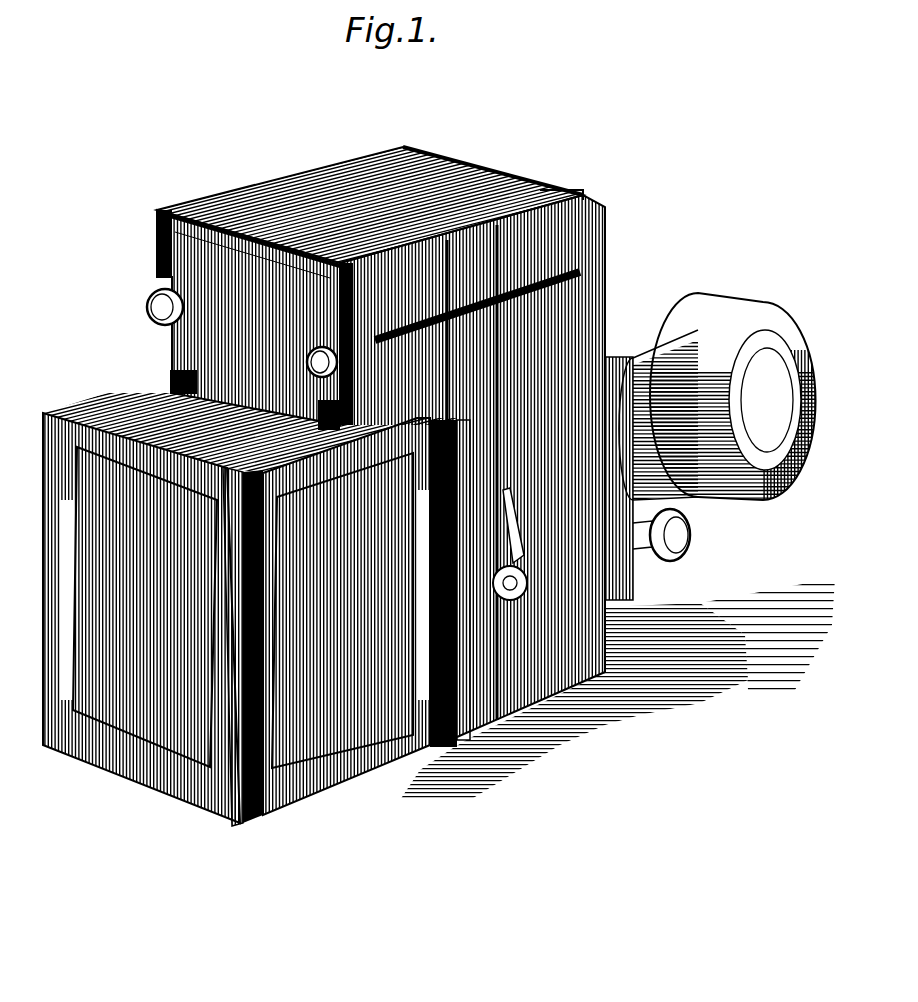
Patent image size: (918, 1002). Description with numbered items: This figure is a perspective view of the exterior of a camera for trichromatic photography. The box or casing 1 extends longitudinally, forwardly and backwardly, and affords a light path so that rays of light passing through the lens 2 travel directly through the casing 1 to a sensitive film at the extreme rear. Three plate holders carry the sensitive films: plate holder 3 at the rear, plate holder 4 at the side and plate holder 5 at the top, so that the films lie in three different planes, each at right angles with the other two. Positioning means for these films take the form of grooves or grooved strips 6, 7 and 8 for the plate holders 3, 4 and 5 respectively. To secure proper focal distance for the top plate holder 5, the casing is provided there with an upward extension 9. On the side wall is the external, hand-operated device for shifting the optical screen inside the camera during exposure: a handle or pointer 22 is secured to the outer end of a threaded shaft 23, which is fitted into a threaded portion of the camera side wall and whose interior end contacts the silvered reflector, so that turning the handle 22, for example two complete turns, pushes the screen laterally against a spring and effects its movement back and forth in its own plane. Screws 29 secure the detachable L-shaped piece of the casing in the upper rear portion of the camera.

The box or casing 1 is at (550, 645).
The lens 2 is at (735, 308).
The plate holder 3 is at (160, 723).
The plate holder 4 is at (358, 688).
The plate holder 5 is at (334, 212).
The grooved strip 6 is at (222, 816).
The grooved strip 7 is at (435, 748).
The grooved strip 8 is at (566, 197).
The upward extension 9 is at (213, 333).
The handle or pointer 22 is at (520, 555).
The threaded shaft 23 is at (470, 722).
The screws 29 is at (150, 300).